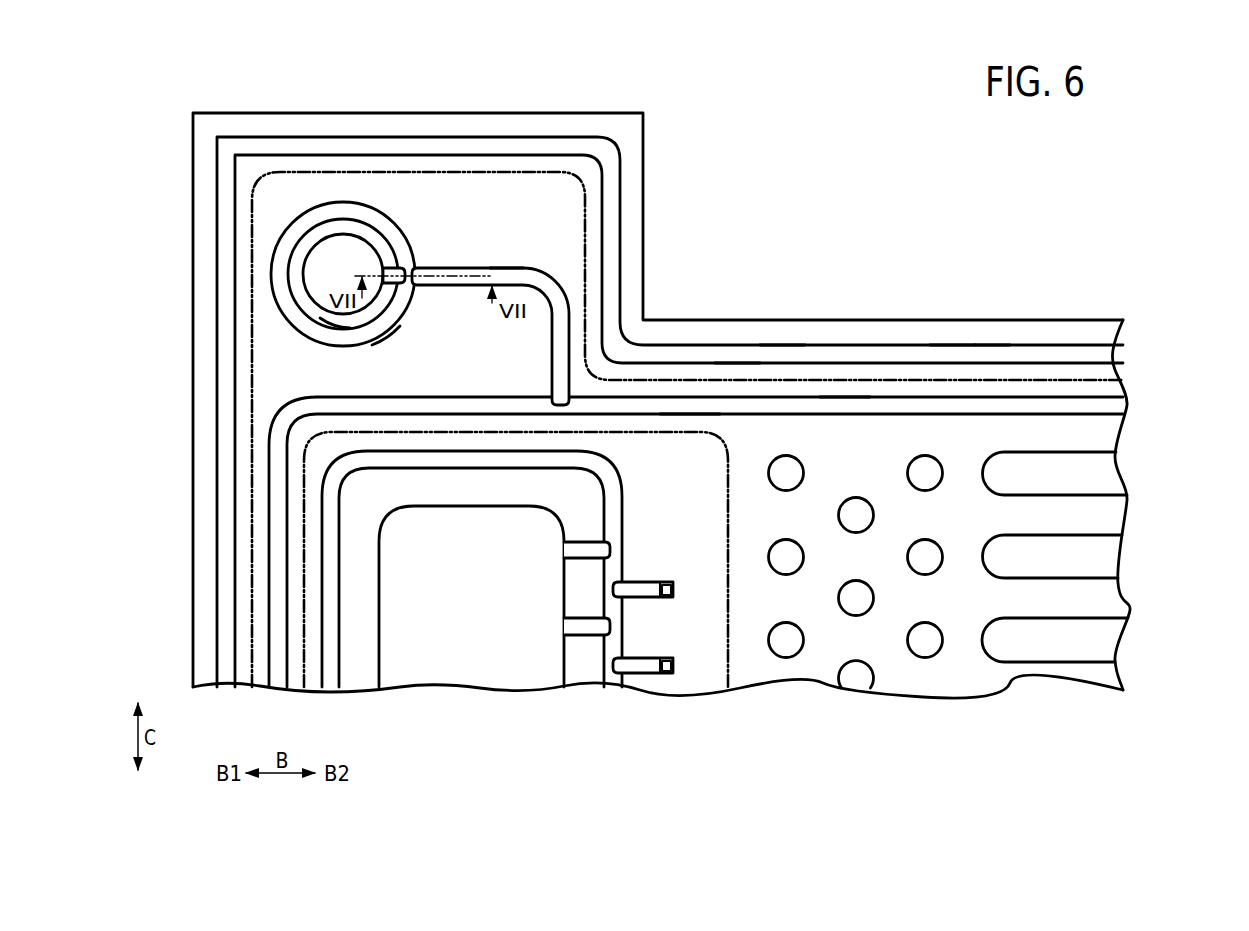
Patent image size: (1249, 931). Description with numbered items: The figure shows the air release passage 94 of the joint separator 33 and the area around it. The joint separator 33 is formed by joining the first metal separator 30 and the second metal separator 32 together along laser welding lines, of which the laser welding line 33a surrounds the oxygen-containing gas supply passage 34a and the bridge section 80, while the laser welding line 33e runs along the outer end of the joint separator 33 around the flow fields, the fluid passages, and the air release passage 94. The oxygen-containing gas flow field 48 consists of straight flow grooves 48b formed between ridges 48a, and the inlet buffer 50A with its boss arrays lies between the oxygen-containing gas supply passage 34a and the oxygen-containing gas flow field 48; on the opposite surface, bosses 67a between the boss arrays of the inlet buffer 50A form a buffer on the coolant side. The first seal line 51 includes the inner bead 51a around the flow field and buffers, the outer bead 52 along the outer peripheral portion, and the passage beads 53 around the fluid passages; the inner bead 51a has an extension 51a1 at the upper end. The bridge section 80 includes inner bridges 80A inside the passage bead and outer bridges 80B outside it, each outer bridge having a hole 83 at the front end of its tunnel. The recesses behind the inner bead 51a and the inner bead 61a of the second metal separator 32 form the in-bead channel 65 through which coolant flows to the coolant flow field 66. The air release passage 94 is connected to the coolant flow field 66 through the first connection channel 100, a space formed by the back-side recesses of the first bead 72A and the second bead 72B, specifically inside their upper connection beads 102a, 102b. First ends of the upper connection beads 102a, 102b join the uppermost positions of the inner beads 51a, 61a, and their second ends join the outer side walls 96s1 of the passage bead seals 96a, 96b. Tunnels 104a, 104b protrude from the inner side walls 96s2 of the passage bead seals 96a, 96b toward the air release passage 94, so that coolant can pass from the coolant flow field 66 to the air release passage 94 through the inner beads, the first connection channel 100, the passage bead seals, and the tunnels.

The first metal separator 30 is at (193, 148).
The second metal separator 32 is at (193, 183).
The joint separator 33 is at (953, 150).
The laser welding line 33a is at (303, 522).
The laser welding line 33e is at (1068, 380).
The oxygen-containing gas supply passage 34a is at (415, 643).
The oxygen-containing gas flow field 48 is at (1109, 557).
The ridges 48a is at (1098, 478).
The straight flow grooves 48b is at (1098, 522).
The inlet buffer 50A is at (910, 638).
The first seal line 51 is at (782, 345).
The inner bead 51a is at (808, 405).
The extension 51a1 is at (887, 405).
The outer bead 52 is at (738, 353).
The passage beads 53 is at (333, 593).
The inner bead 61a is at (847, 407).
The in-bead channel 65 is at (687, 405).
The coolant flow field 66 is at (1108, 602).
The bosses 67a is at (853, 510).
The first bead 72A is at (953, 345).
The second bead 72B is at (985, 345).
The bridge section 80 is at (609, 570).
The inner bridges 80A is at (580, 555).
The outer bridges 80B is at (645, 587).
The hole 83 is at (663, 597).
The air release passage 94 is at (320, 273).
The passage bead seal 96a is at (307, 220).
The passage bead seal 96b is at (343, 212).
The outer side walls 96s1 is at (372, 345).
The inner side walls 96s2 is at (338, 330).
The first connection channel 100 is at (452, 270).
The upper connection bead 102a is at (470, 280).
The upper connection bead 102b is at (505, 275).
The tunnel 104a is at (390, 272).
The tunnel 104b is at (380, 270).